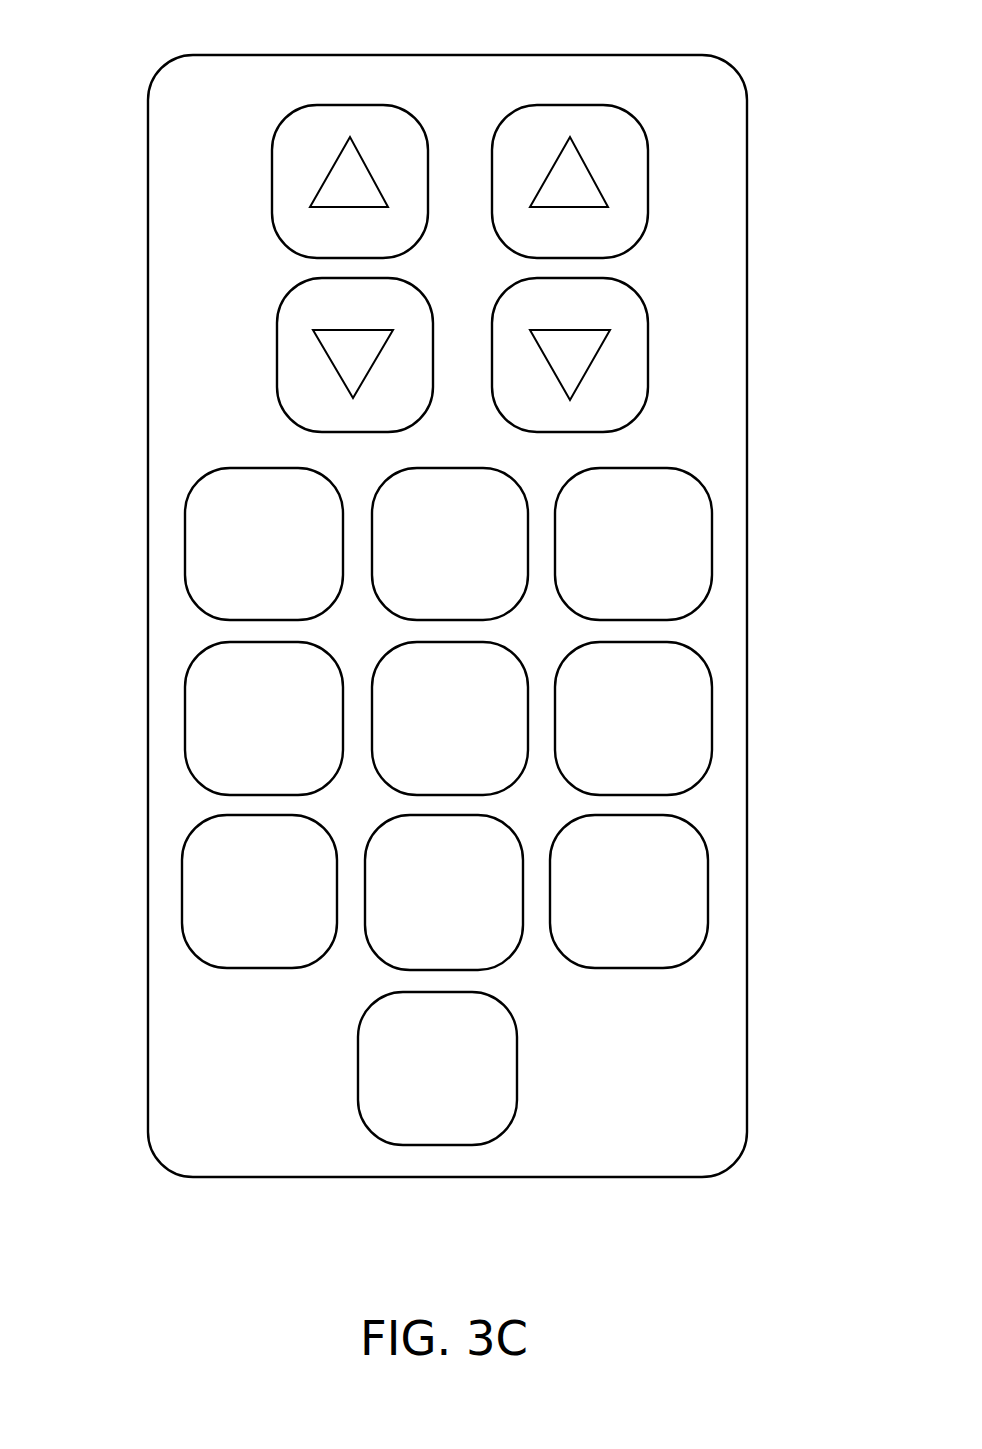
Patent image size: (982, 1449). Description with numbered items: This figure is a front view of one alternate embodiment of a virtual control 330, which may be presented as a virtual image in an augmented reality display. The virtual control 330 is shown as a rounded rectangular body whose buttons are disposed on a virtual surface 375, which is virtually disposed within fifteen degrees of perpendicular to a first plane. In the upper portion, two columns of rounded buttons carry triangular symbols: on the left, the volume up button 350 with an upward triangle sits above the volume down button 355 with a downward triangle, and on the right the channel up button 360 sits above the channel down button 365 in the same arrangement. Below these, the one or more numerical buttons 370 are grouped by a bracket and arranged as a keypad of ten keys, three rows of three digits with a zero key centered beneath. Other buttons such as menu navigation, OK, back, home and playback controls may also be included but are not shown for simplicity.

The virtual control 330 is at (743, 80).
The virtual surface 375 is at (730, 147).
The volume up button 350 is at (272, 180).
The volume down button 355 is at (277, 345).
The channel up button 360 is at (648, 172).
The channel down button 365 is at (648, 355).
The numerical buttons 370 is at (760, 467).